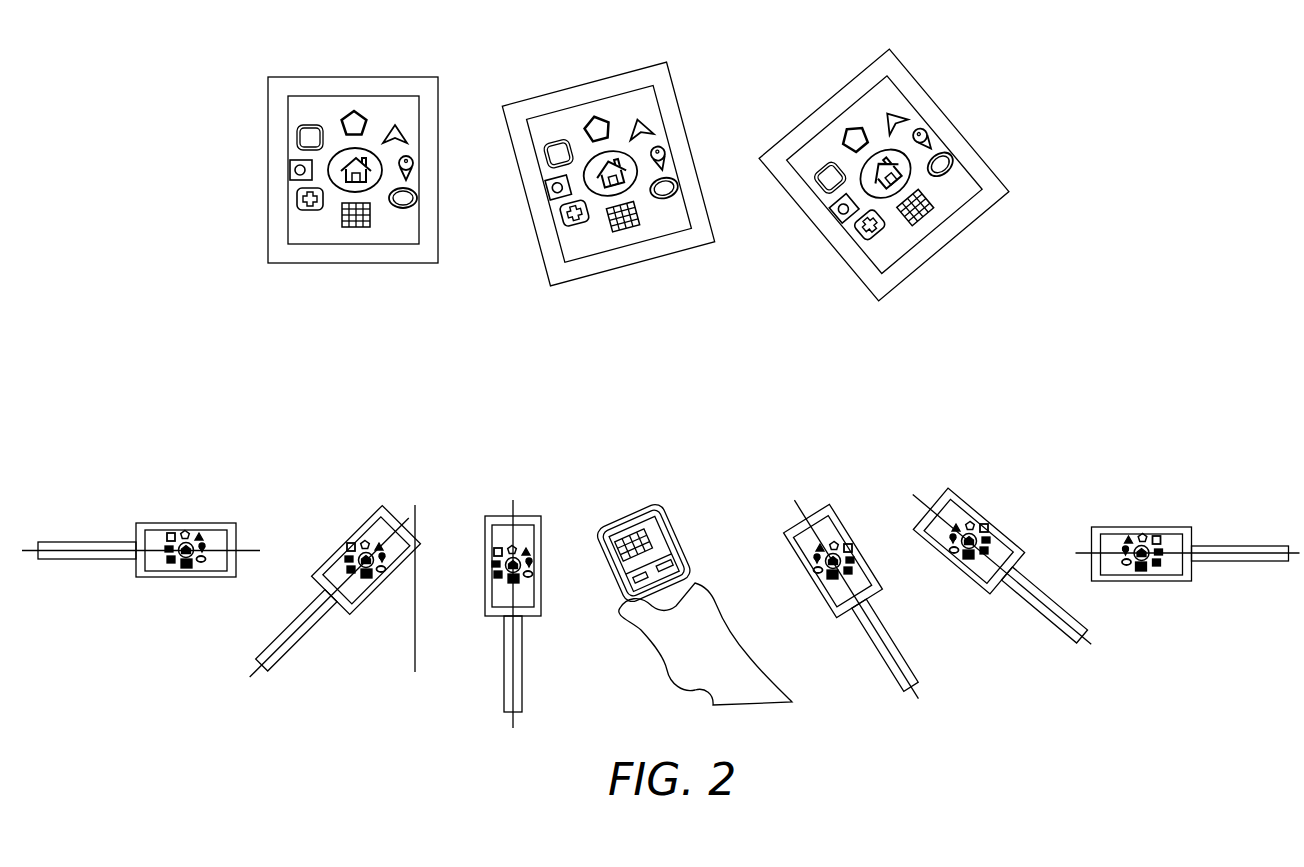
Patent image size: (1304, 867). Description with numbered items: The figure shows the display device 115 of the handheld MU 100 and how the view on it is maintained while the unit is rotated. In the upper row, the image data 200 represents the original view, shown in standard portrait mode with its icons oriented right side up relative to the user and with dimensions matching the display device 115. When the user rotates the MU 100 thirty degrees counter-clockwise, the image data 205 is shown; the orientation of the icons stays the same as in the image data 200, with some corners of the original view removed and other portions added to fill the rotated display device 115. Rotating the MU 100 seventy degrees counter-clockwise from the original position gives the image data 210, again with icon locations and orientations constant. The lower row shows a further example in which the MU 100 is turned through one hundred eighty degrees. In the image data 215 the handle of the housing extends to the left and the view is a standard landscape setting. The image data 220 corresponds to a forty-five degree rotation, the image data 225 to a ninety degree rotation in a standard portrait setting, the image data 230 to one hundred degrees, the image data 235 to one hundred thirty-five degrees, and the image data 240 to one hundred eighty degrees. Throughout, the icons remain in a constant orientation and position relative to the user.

The MU 100 is at (653, 503).
The display device 115 is at (268, 192).
The image data 200 is at (288, 124).
The image data 205 is at (587, 118).
The image data 210 is at (962, 180).
The image data 215 is at (158, 562).
The image data 220 is at (383, 532).
The image data 225 is at (507, 533).
The image data 230 is at (822, 528).
The image data 235 is at (953, 513).
The image data 240 is at (1173, 537).